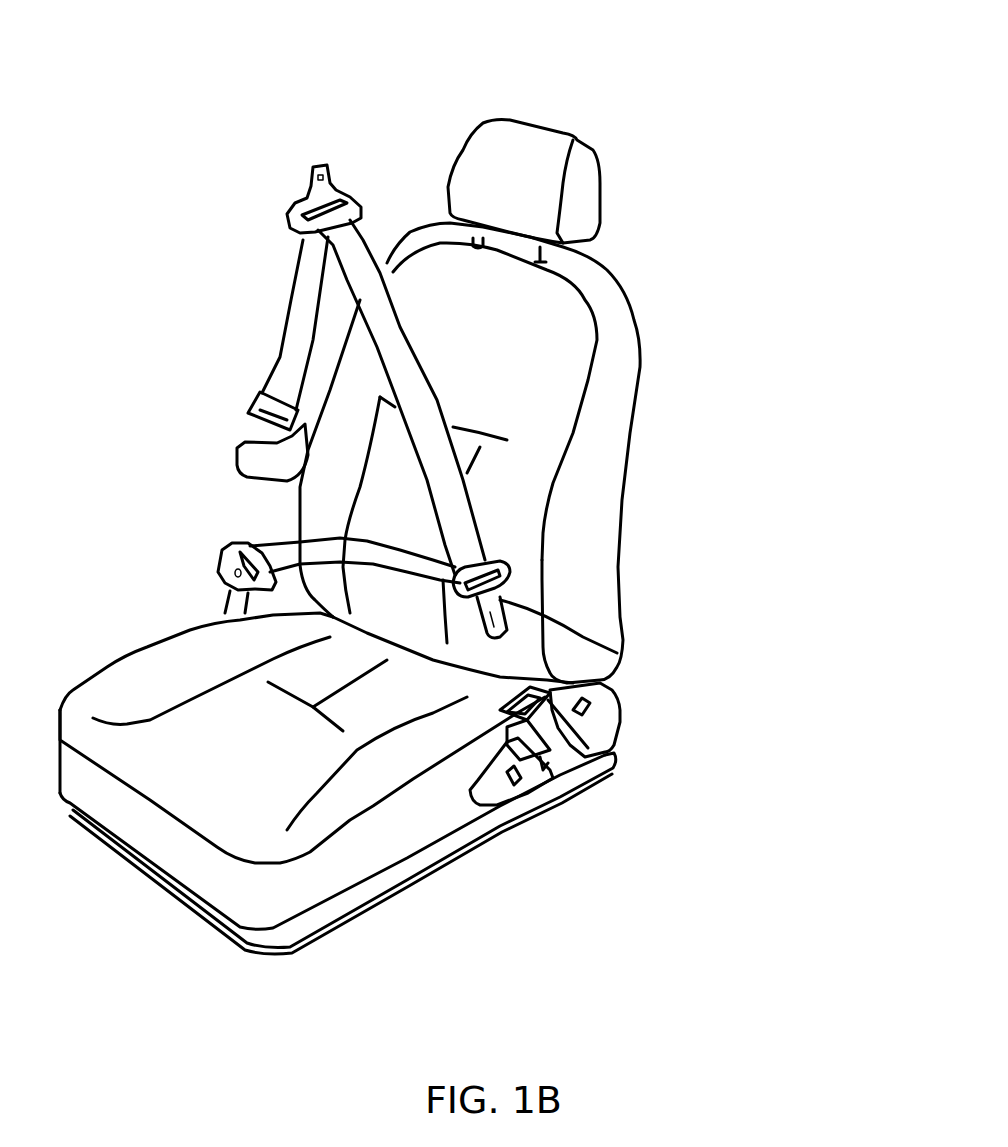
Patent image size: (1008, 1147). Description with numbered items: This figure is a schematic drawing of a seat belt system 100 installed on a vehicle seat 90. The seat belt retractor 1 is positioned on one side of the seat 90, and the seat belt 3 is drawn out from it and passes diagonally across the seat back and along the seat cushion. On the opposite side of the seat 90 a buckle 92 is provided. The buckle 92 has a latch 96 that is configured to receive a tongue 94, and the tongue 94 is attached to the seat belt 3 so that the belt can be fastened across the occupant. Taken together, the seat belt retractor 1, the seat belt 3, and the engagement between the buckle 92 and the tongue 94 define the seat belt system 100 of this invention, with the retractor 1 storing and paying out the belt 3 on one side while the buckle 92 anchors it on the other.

The seat belt retractor 1 is at (243, 445).
The seat belt 3 is at (362, 266).
The seat 90 is at (513, 513).
The buckle 92 is at (553, 790).
The tongue 94 is at (617, 653).
The latch 96 is at (603, 770).
The seat belt system 100 is at (461, 542).